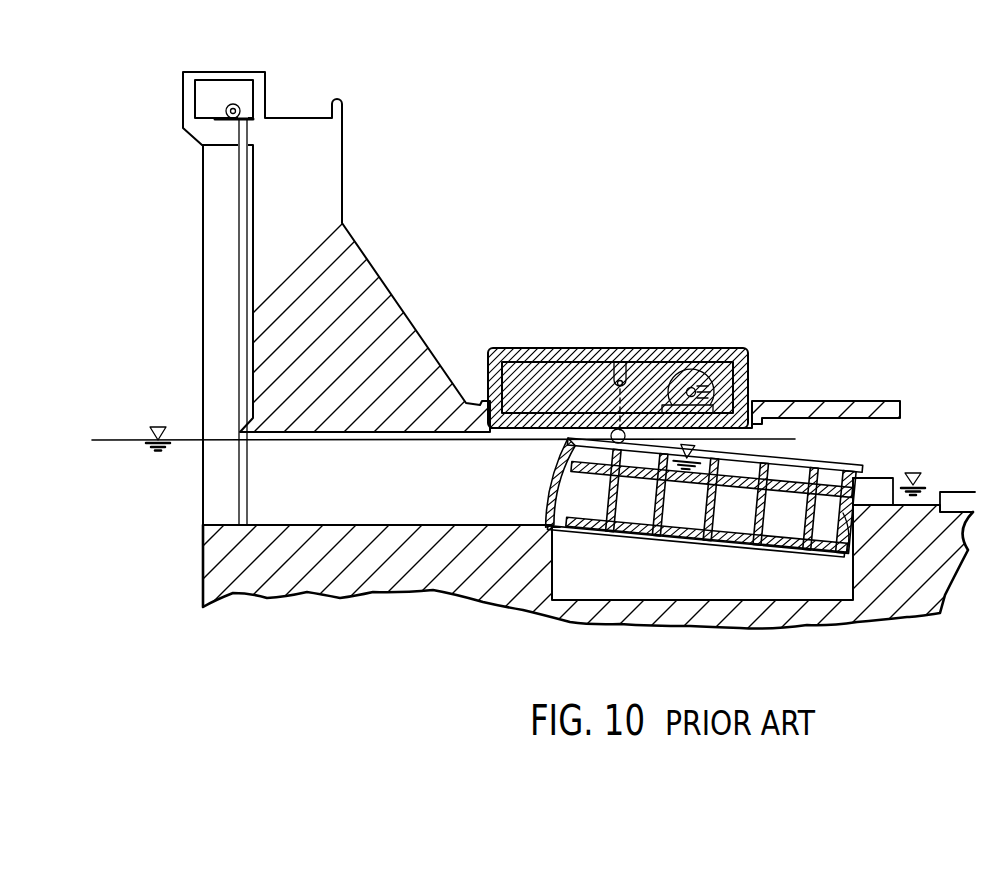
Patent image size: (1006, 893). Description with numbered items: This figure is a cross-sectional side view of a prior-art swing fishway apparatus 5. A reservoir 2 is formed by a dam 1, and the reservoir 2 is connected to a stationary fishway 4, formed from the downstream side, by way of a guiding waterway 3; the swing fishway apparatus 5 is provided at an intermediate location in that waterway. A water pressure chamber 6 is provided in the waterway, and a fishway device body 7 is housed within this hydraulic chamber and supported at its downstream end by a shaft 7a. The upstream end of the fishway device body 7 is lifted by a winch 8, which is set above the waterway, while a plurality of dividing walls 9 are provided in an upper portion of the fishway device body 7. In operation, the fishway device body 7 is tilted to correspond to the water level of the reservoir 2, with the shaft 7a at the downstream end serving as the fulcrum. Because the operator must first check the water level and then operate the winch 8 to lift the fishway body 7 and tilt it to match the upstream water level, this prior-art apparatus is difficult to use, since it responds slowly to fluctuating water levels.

The dam 1 is at (306, 315).
The reservoir 2 is at (117, 462).
The guiding waterway 3 is at (380, 522).
The stationary fishway 4 is at (962, 488).
The swing fishway apparatus 5 is at (796, 372).
The water pressure chamber 6 is at (667, 600).
The fishway device body 7 is at (828, 458).
The shaft 7a is at (845, 513).
The winch 8 is at (654, 368).
The dividing walls 9 is at (717, 462).